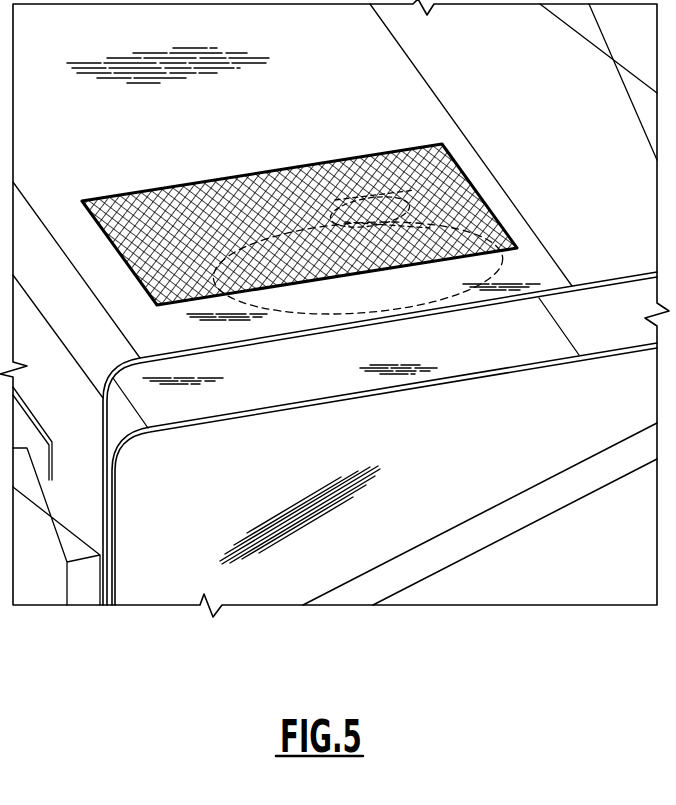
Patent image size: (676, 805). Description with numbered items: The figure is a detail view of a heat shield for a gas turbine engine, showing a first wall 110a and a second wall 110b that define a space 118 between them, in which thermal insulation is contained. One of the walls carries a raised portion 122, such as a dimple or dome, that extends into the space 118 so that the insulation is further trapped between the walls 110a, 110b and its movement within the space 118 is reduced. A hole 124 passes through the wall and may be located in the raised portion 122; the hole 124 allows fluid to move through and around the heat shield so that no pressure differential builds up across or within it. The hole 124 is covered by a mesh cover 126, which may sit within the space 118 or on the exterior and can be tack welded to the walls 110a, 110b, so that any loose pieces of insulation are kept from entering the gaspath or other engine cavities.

The first wall 110a is at (519, 350).
The second wall 110b is at (415, 450).
The space 118 is at (283, 391).
The raised portion 122 is at (563, 240).
The hole 124 is at (352, 198).
The mesh cover 126 is at (200, 182).